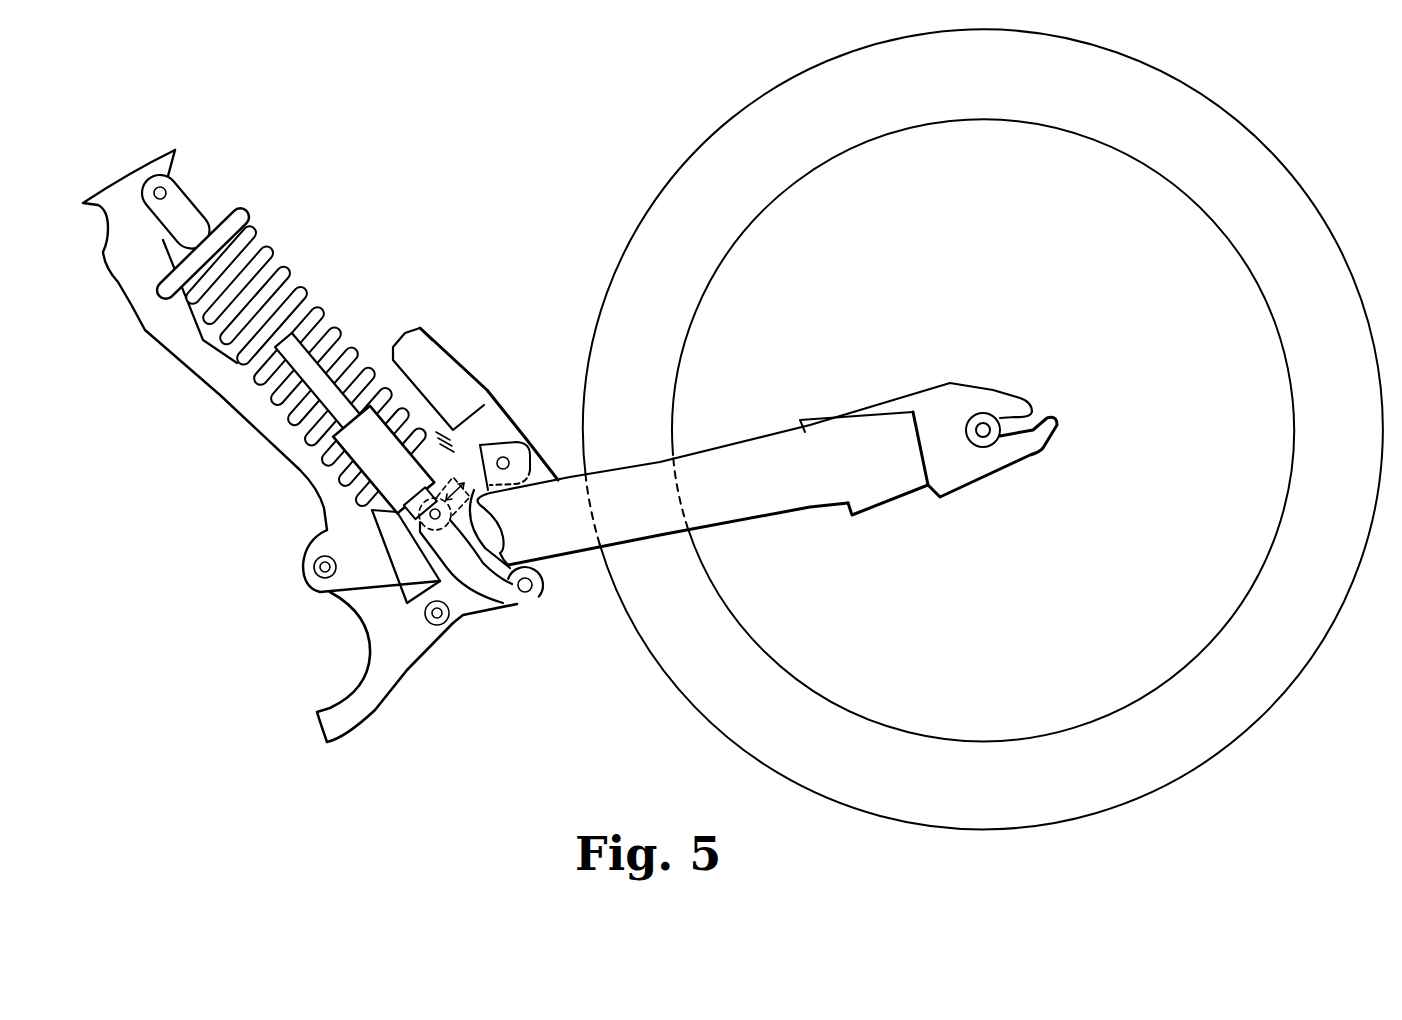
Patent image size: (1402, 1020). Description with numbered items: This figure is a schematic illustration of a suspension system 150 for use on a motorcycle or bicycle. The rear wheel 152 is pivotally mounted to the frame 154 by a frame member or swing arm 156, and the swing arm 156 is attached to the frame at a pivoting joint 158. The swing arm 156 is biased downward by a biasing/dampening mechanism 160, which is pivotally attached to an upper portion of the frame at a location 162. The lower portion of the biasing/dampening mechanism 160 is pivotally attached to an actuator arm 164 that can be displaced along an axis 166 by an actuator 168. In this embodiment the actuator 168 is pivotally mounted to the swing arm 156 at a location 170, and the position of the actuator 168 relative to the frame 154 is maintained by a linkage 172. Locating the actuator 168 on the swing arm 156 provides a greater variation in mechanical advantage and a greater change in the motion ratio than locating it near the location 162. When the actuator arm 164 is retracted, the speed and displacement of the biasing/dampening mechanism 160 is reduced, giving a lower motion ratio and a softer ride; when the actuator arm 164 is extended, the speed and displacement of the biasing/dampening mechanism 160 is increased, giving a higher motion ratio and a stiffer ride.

The suspension system 150 is at (417, 243).
The rear wheel 152 is at (672, 648).
The frame 154 is at (338, 708).
The swing arm 156 is at (733, 478).
The pivoting joint 158 is at (322, 570).
The biasing/dampening mechanism 160 is at (258, 262).
The location 162 is at (122, 203).
The actuator arm 164 is at (430, 514).
The axis 166 is at (513, 603).
The actuator 168 is at (442, 372).
The location 170 is at (505, 456).
The linkage 172 is at (467, 608).